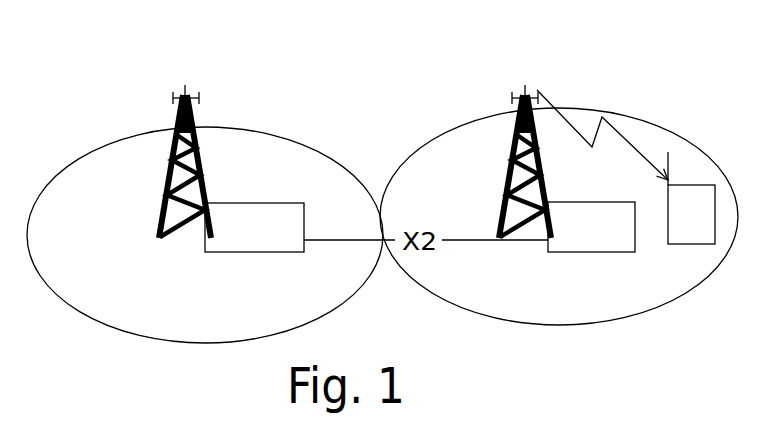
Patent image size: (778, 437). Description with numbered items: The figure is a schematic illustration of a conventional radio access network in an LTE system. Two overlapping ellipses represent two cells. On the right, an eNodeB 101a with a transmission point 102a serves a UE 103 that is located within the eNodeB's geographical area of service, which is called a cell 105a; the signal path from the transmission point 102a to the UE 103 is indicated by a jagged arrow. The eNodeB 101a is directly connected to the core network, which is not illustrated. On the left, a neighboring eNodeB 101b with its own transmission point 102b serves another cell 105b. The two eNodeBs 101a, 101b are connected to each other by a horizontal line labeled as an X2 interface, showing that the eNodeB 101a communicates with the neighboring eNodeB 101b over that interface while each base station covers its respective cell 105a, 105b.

The eNodeB 101a is at (566, 257).
The neighboring eNodeB 101b is at (254, 261).
The transmission point 102a is at (542, 130).
The transmission point 102b is at (202, 131).
The UE 103 is at (660, 229).
The cell 105a is at (559, 191).
The cell 105b is at (205, 212).